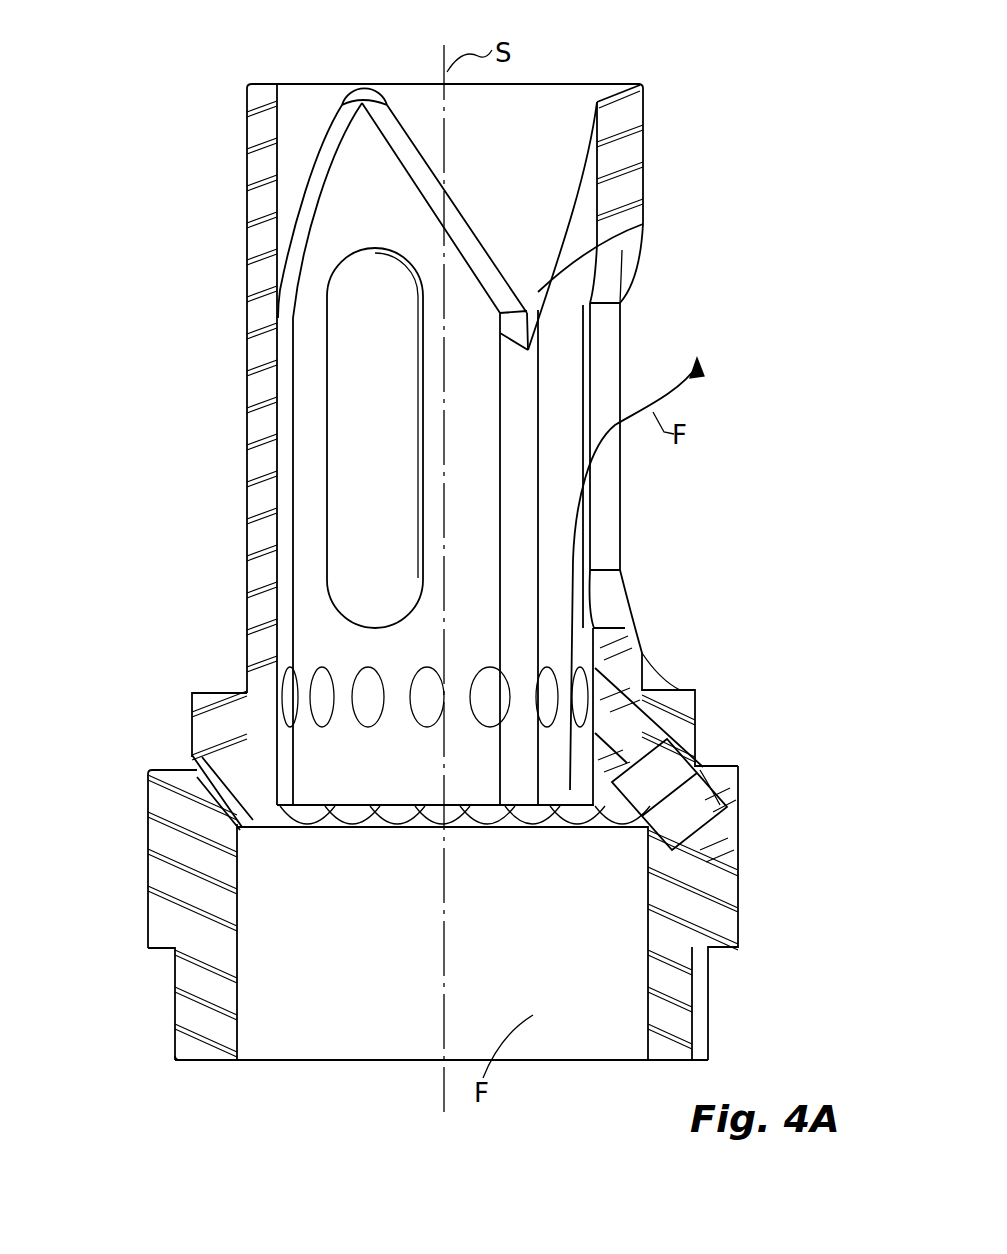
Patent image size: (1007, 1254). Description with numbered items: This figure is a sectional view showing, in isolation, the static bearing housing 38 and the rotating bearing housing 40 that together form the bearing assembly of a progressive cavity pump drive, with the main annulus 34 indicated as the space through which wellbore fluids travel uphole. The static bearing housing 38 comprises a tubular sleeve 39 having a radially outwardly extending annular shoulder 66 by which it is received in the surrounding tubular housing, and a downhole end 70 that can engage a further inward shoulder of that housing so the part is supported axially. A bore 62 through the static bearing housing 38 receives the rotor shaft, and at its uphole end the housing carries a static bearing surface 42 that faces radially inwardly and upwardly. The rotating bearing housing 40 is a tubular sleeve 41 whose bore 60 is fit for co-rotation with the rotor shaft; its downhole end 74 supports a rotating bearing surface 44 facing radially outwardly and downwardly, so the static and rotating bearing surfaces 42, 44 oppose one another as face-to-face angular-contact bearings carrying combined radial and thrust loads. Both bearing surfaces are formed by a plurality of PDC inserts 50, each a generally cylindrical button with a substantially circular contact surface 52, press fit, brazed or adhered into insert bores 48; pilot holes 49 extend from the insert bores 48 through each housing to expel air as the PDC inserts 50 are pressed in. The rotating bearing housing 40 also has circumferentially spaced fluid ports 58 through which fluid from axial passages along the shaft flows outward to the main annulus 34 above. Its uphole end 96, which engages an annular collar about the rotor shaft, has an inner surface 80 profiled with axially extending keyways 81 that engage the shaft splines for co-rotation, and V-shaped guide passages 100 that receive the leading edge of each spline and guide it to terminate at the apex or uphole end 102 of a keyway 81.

The main annulus 34 is at (565, 832).
The static bearing housing 38 is at (113, 964).
The tubular sleeve 39 is at (148, 880).
The rotating bearing housing 40 is at (733, 416).
The tubular sleeve 41 is at (625, 188).
The static bearing surface 42 is at (655, 870).
The rotating bearing surface 44 is at (193, 762).
The insert bores 48 is at (677, 743).
The pilot holes 49 is at (595, 670).
The PDC inserts 50 is at (212, 796).
The contact surface 52 is at (677, 790).
The fluid ports 58 is at (630, 250).
The bore 60 is at (280, 488).
The bore 62 is at (648, 1000).
The annular shoulder 66 is at (158, 952).
The downhole end 70 is at (208, 1064).
The downhole end 74 is at (192, 714).
The inner surface 80 is at (486, 496).
The keyways 81 is at (535, 405).
The uphole end 96 is at (603, 84).
The V-shaped guide passages 100 is at (538, 172).
The uphole end 102 is at (645, 226).